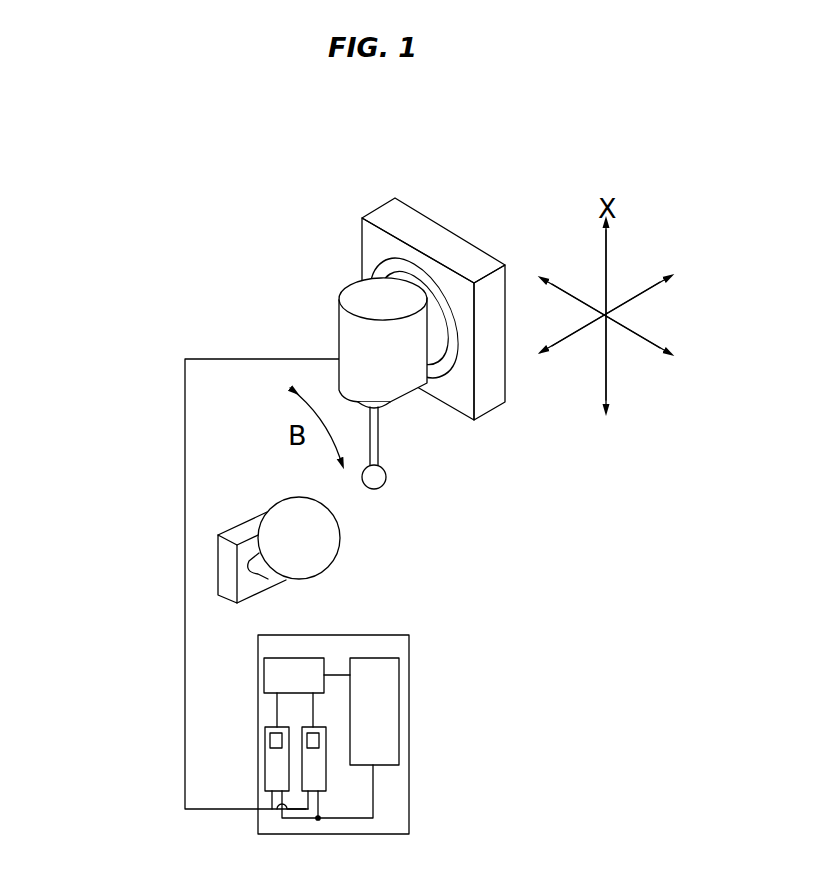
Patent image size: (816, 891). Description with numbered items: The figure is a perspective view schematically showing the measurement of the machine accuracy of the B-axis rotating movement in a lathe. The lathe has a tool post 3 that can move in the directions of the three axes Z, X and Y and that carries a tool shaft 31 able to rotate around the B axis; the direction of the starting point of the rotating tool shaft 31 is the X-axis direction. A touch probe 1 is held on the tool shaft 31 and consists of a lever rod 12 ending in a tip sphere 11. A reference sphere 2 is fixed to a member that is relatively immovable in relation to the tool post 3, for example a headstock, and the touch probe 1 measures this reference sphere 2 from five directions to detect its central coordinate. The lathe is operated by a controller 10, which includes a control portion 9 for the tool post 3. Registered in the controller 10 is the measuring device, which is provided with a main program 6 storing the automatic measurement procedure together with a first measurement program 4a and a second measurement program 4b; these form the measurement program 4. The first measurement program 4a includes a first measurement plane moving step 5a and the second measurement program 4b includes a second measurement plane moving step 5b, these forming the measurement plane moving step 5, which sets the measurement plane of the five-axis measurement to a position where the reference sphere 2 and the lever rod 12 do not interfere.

The touch probe 1 is at (450, 486).
The tip sphere 11 is at (385, 482).
The lever rod 12 is at (380, 440).
The reference sphere 2 is at (283, 517).
The tool post 3 is at (438, 240).
The tool shaft 31 is at (363, 398).
The measurement program 4 is at (195, 797).
The first measurement program 4a is at (270, 769).
The second measurement program 4b is at (315, 778).
The measurement plane moving step 5 is at (192, 697).
The first measurement plane moving step 5a is at (277, 740).
The second measurement plane moving step 5b is at (313, 740).
The main program 6 is at (272, 670).
The control portion 9 is at (398, 720).
The controller 10 is at (293, 738).